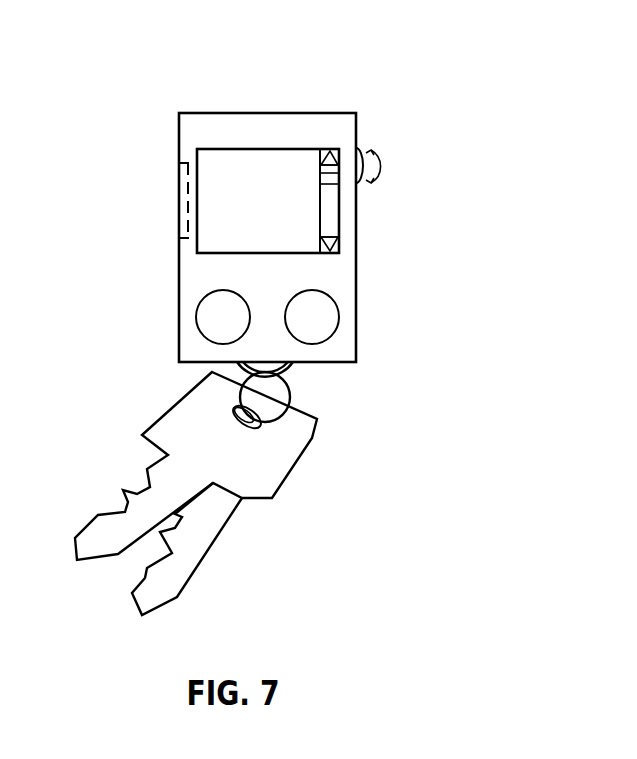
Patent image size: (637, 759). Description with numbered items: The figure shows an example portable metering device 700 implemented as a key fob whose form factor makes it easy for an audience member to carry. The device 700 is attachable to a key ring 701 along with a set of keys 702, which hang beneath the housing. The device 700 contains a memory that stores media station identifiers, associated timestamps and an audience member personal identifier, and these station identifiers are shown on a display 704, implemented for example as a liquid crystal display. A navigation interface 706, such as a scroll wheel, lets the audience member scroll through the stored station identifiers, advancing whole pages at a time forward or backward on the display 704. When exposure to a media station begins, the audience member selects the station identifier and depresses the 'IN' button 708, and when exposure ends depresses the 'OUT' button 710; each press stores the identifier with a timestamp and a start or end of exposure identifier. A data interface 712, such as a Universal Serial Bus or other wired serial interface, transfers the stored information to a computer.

The portable metering device 700 is at (178, 113).
The key ring 701 is at (291, 393).
The set of keys 702 is at (282, 457).
The display 704 is at (260, 148).
The navigation interface 706 is at (358, 150).
The 'IN' button 708 is at (196, 318).
The 'OUT' button 710 is at (339, 317).
The data interface 712 is at (183, 241).